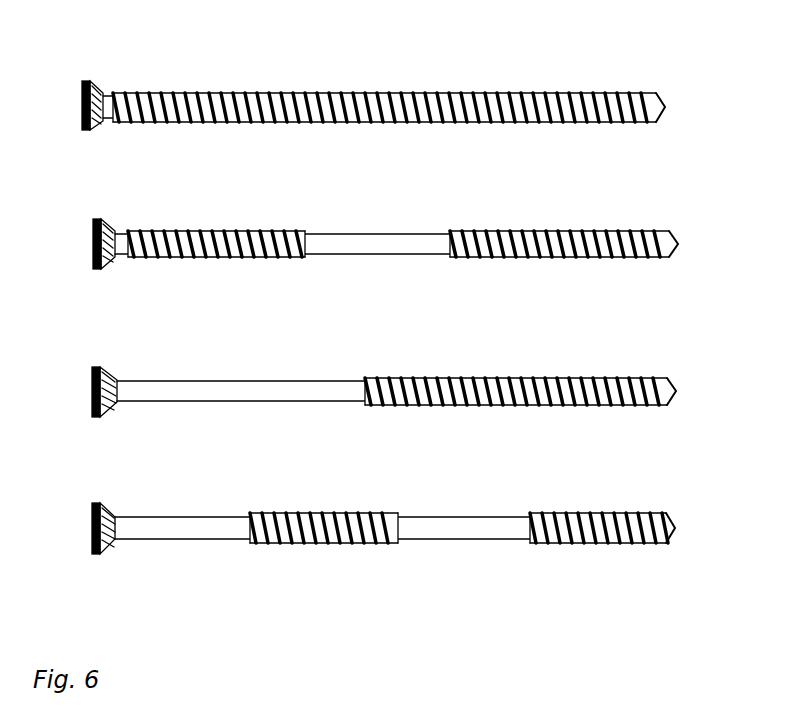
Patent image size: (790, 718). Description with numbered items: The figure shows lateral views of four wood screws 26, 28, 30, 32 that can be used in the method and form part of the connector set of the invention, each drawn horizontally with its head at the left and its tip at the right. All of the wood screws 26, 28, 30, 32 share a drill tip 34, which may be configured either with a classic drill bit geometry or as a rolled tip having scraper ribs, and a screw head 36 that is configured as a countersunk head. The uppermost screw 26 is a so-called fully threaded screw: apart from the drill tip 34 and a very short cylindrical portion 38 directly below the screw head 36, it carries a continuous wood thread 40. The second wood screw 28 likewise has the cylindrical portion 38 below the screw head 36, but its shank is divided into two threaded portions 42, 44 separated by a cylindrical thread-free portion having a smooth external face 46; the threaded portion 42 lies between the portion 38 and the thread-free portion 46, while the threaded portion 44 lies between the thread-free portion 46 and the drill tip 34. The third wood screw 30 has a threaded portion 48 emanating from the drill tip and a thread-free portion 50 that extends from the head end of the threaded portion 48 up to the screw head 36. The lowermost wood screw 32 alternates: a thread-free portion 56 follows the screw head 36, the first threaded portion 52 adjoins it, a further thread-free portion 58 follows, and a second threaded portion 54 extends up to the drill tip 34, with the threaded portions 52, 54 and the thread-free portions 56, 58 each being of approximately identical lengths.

The wood screw 26 is at (541, 74).
The wood screw 28 is at (544, 211).
The wood screw 30 is at (530, 357).
The wood screw 32 is at (511, 492).
The drill tip 34 is at (661, 98).
The screw head 36 is at (97, 84).
The cylindrical portion 38 is at (114, 104).
The wood thread 40 is at (374, 93).
The threaded portion 42 is at (254, 231).
The threaded portion 44 is at (599, 232).
The thread-free portion 46 is at (356, 236).
The threaded portion 48 is at (435, 379).
The thread-free portion 50 is at (234, 385).
The first threaded portion 52 is at (347, 538).
The second threaded portion 54 is at (608, 538).
The thread-free portion 56 is at (192, 531).
The thread-free portion 58 is at (468, 535).